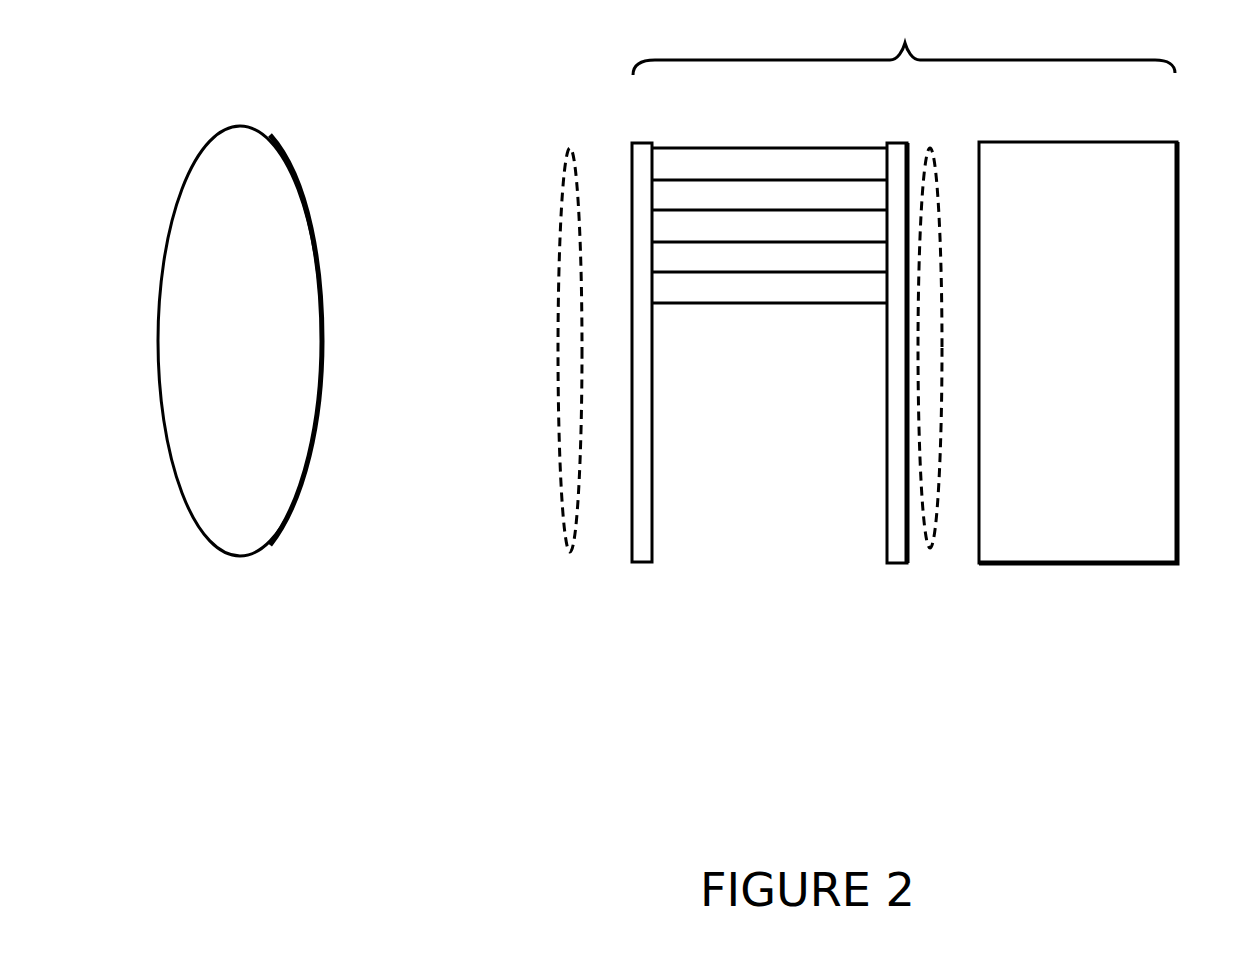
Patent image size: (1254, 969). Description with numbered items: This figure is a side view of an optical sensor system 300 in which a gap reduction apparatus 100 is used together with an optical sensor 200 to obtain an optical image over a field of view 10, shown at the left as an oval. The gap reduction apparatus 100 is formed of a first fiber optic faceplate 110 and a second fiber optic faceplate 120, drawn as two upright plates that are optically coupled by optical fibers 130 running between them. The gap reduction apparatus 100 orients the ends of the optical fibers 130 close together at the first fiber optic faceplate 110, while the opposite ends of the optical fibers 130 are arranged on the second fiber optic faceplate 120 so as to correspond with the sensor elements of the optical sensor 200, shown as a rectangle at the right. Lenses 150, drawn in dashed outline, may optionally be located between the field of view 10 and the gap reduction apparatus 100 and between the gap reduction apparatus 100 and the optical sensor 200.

The field of view 10 is at (226, 359).
The gap reduction apparatus 100 is at (778, 427).
The first fiber optic faceplate 110 is at (640, 565).
The second fiber optic faceplate 120 is at (900, 565).
The optical fibers 130 is at (758, 147).
The lenses 150 is at (558, 538).
The optical sensor 200 is at (1109, 373).
The optical sensor system 300 is at (904, 41).